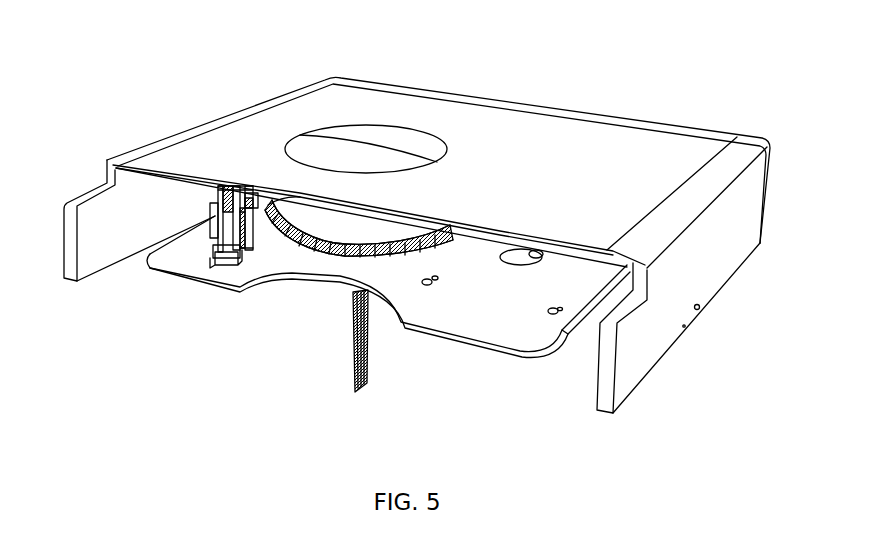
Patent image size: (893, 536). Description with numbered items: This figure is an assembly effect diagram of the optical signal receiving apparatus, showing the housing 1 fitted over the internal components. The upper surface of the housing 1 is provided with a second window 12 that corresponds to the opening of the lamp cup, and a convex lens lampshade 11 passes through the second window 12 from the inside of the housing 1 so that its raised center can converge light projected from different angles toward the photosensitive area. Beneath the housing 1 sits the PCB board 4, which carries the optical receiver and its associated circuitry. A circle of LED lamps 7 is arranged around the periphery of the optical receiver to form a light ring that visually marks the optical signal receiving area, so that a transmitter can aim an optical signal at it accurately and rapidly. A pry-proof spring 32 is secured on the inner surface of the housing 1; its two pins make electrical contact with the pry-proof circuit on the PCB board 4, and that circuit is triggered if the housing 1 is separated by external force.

The housing 1 is at (417, 206).
The convex lens lampshade 11 is at (350, 155).
The second window 12 is at (418, 142).
The PCB board 4 is at (480, 316).
The LED lamps 7 is at (318, 250).
The pry-proof spring 32 is at (218, 263).